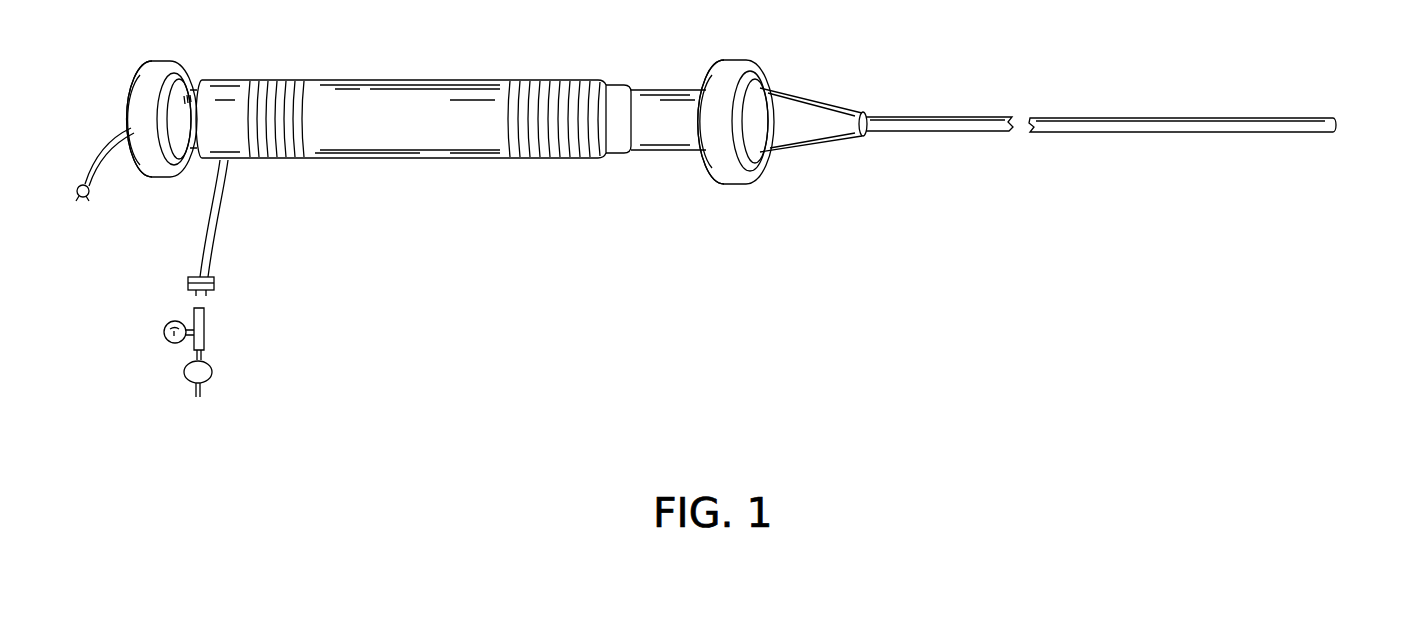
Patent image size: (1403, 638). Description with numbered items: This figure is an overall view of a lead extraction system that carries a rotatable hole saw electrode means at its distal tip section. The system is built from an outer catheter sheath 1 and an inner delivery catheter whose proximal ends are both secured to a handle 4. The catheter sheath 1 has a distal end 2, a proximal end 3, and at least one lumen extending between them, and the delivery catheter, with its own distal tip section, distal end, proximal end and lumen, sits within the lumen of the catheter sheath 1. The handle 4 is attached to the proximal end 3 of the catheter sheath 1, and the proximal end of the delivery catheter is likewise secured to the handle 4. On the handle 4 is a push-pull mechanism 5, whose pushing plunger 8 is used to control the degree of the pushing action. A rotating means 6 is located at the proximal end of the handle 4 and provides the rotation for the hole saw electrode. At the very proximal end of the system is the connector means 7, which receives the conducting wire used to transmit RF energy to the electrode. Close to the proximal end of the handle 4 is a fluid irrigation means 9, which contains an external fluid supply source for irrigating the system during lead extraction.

The catheter sheath 1 is at (980, 112).
The distal end 2 is at (1330, 112).
The proximal end 3 is at (873, 110).
The handle 4 is at (442, 163).
The push-pull mechanism 5 is at (670, 157).
The rotating means 6 is at (135, 157).
The connector means 7 is at (98, 181).
The pushing plunger 8 is at (722, 185).
The fluid irrigation means 9 is at (212, 317).